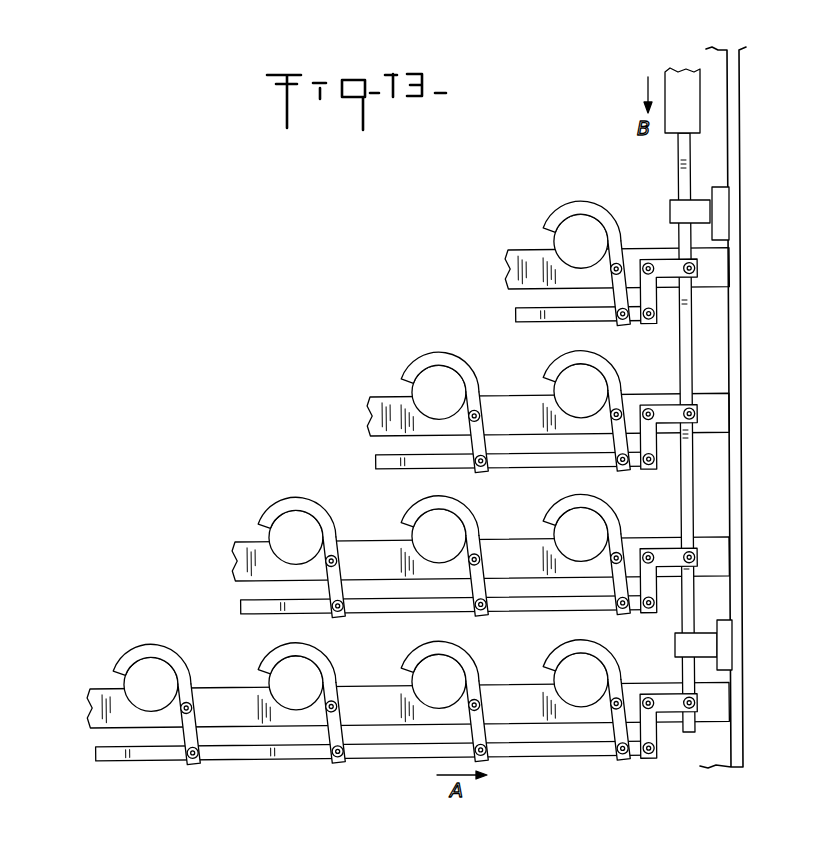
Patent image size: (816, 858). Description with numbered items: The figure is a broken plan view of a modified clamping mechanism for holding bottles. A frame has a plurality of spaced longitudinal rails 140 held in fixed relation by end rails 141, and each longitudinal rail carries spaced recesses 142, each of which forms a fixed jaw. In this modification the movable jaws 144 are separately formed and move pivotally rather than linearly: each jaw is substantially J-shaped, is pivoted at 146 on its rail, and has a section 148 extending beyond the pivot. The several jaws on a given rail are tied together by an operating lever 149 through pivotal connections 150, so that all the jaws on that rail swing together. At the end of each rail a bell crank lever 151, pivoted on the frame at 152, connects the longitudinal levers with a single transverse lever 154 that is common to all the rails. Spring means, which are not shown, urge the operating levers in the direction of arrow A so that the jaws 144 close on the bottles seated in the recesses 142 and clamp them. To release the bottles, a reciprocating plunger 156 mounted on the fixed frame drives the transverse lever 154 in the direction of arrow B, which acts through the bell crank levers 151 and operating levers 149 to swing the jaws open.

The longitudinal rail 140 is at (524, 270).
The end rail 141 is at (743, 472).
The recess 142 is at (560, 250).
The movable jaw 144 is at (599, 203).
The pivot 146 is at (620, 262).
The section extending beyond the pivot 148 is at (485, 592).
The operating lever 149 is at (377, 461).
The pivotal connection 150 is at (612, 464).
The bell crank lever 151 is at (665, 408).
The pivot on the frame 152 is at (647, 410).
The transverse lever 154 is at (682, 180).
The reciprocating plunger 156 is at (677, 82).